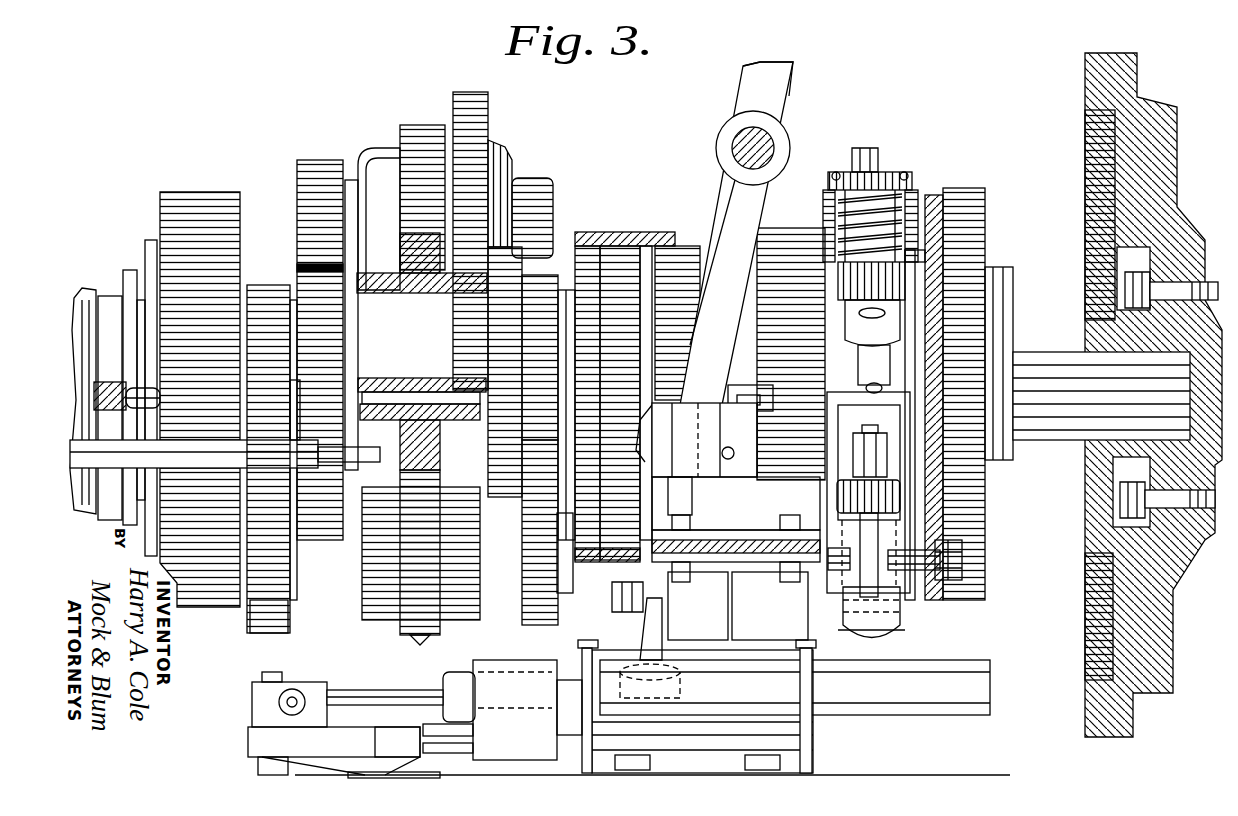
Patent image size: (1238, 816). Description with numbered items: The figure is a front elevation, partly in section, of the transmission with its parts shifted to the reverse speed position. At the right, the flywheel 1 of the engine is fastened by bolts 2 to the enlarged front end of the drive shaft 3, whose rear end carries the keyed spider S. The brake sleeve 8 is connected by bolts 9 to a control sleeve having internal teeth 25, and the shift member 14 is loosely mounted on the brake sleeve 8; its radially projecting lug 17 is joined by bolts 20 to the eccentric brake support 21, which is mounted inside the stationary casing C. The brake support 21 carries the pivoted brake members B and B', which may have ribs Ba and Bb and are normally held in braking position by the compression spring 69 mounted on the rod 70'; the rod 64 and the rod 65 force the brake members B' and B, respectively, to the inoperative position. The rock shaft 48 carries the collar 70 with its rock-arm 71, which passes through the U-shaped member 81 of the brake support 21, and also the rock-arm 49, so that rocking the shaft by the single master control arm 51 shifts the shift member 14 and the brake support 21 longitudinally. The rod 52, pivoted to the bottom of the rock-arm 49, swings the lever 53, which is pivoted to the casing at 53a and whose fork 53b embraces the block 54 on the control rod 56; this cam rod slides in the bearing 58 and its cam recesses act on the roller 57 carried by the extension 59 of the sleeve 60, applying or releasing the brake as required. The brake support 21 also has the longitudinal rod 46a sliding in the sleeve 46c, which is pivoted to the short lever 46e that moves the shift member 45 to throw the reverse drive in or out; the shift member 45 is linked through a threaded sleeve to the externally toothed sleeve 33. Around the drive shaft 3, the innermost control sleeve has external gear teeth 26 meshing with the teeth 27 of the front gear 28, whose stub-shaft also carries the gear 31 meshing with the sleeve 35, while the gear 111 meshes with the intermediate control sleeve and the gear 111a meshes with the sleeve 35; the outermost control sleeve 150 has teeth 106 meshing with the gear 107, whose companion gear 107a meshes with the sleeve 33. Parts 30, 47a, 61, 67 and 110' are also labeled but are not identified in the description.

The flywheel 1 is at (1140, 108).
The bolts 2 is at (1160, 293).
The drive shaft 3 is at (1038, 367).
The brake sleeve 8 is at (766, 381).
The bolts 9 is at (737, 395).
The shift member 14 is at (977, 208).
The lug 17 is at (950, 562).
The bolts 20 is at (843, 550).
The brake support 21 is at (900, 600).
The internal teeth 25 is at (597, 273).
The external gear teeth 26 is at (440, 476).
The gear teeth 27 is at (488, 110).
The front gear 28 is at (510, 160).
The hub 30 is at (548, 186).
The gear 31 is at (321, 165).
The sleeve 33 is at (257, 292).
The sleeve 35 is at (298, 270).
The shift member 45 is at (202, 197).
The longitudinal rod 46a is at (660, 400).
The sleeve 46c is at (218, 438).
The short lever 46e is at (128, 392).
The shaft sleeve 47a is at (206, 488).
The rock shaft 48 is at (775, 150).
The rock-arm 49 is at (585, 648).
The arm 51 is at (780, 100).
The rod 52 is at (387, 698).
The lever 53 is at (308, 745).
The pivot 53a is at (393, 747).
The fork 53b is at (465, 742).
The block 54 is at (512, 678).
The control rod 56 is at (992, 680).
The roller 57 is at (680, 685).
The bearing 58 is at (790, 752).
The extension 59 is at (640, 632).
The sleeve 60 is at (683, 612).
The plunger 61 is at (888, 355).
The rod 64 is at (880, 520).
The rod 65 is at (898, 420).
The cup 67 is at (905, 326).
The compression spring 69 is at (826, 222).
The collar 70 is at (735, 148).
The rod 70' is at (967, 263).
The rock-arm 71 is at (722, 203).
The U-shaped member 81 is at (730, 460).
The external gear teeth 106 is at (550, 285).
The gear 107 is at (617, 612).
The gear 107a is at (290, 622).
The gear 110' is at (523, 532).
The gear 111 is at (503, 287).
The gear 111a is at (313, 380).
The outermost control sleeve 150 is at (623, 277).
The brake member B is at (959, 397).
The brake member B' is at (973, 425).
The rib Ba is at (840, 175).
The rib Bb is at (900, 173).
The stationary casing C is at (912, 775).
The spider S is at (416, 131).